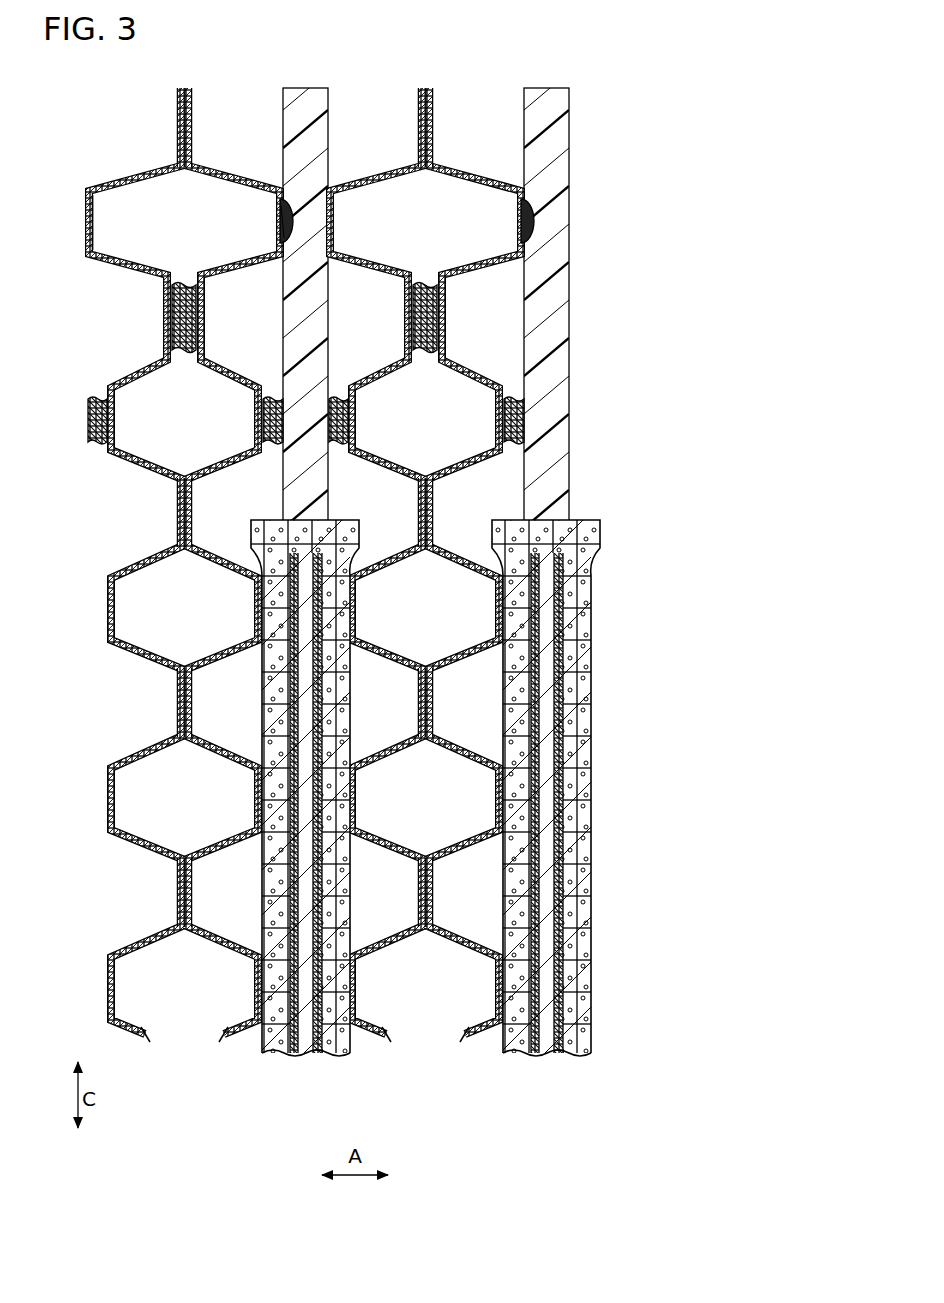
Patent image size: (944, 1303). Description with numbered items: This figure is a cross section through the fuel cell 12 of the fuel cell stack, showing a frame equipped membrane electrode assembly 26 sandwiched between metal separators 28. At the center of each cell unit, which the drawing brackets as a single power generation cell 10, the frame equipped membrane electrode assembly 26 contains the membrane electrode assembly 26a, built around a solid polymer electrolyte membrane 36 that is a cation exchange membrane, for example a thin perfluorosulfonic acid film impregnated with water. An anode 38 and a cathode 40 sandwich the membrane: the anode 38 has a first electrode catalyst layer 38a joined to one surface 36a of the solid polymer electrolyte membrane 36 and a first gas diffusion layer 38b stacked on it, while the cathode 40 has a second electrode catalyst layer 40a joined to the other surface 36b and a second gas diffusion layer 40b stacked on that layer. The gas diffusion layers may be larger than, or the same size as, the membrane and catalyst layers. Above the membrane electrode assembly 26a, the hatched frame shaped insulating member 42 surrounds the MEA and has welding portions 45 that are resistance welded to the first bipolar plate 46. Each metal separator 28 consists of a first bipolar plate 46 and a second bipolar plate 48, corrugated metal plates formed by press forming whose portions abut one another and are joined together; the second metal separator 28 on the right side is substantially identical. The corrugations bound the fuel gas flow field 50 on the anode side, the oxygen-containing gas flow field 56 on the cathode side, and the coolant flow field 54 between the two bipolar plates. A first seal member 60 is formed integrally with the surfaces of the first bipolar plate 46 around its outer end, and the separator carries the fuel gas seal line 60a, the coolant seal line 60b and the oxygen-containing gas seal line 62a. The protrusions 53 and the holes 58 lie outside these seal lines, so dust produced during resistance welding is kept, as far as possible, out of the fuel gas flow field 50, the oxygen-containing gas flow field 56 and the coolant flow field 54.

The fuel cell 12 is at (118, 86).
The power generation cell 10 is at (375, 623).
The frame equipped membrane electrode assembly 26 is at (489, 826).
The membrane electrode assembly 26a is at (489, 826).
The metal separator 28 is at (305, 606).
The first bipolar plate 46 is at (220, 952).
The second bipolar plate 48 is at (150, 952).
The frame shaped insulating member 42 is at (320, 113).
The solid polymer electrolyte membrane 36 is at (557, 799).
The one surface of the solid polymer electrolyte membrane 36a is at (539, 905).
The other surface of the solid polymer electrolyte membrane 36b is at (553, 905).
The anode 38 is at (605, 753).
The first electrode catalyst layer 38a is at (538, 733).
The first gas diffusion layer 38b is at (526, 762).
The cathode 40 is at (622, 826).
The second electrode catalyst layer 40a is at (560, 807).
The second gas diffusion layer 40b is at (573, 843).
The fuel gas flow field 50 is at (344, 695).
The oxygen-containing gas flow field 56 is at (381, 717).
The coolant flow field 54 is at (305, 791).
The hole 58 is at (87, 212).
The first seal member 60 is at (362, 364).
The fuel gas seal line 60a is at (270, 410).
The coolant seal line 60b is at (184, 314).
The oxygen-containing gas seal line 62a is at (89, 418).
The protrusion 53 is at (278, 228).
The welding portion 45 is at (280, 215).